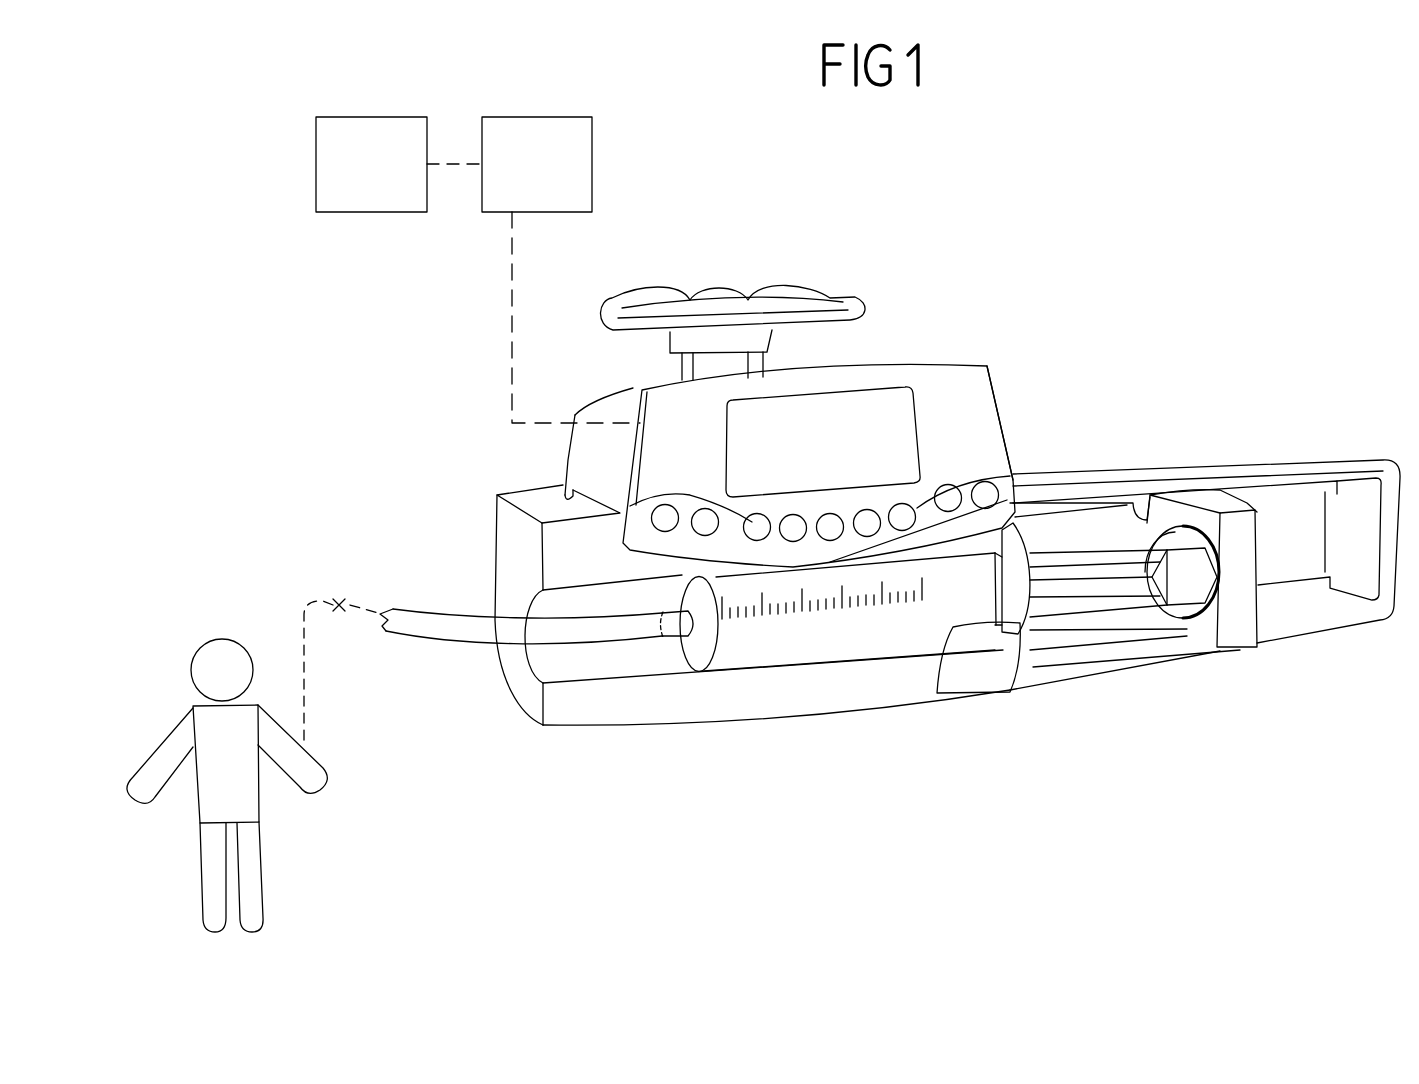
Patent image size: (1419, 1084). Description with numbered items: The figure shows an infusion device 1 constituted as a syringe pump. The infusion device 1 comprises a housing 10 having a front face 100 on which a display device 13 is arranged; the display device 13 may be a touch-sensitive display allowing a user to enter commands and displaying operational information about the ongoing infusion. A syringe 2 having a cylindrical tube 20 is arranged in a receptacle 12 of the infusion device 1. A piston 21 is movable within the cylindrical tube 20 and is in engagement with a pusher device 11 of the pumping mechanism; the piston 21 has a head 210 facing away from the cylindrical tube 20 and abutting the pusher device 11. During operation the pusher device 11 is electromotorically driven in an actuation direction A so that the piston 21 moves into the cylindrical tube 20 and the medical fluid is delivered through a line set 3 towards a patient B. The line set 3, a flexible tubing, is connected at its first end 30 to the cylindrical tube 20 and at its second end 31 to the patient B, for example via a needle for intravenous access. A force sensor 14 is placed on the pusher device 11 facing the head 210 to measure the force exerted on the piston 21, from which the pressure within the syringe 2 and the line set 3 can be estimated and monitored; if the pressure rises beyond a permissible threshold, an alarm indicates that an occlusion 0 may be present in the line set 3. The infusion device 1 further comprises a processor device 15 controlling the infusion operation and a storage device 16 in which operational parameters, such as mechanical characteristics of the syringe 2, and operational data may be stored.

The infusion device 1 is at (497, 497).
The syringe 2 is at (923, 666).
The line set 3 is at (477, 634).
The housing 10 is at (824, 416).
The pusher device 11 is at (1237, 633).
The receptacle 12 is at (933, 655).
The display device 13 is at (885, 408).
The force sensor 14 is at (1210, 568).
The processor device 15 is at (523, 138).
The storage device 16 is at (372, 140).
The cylindrical tube 20 is at (913, 642).
The piston 21 is at (1087, 607).
The first end 30 is at (675, 636).
The second end 31 is at (304, 747).
The front face 100 is at (980, 417).
The head 210 is at (1203, 605).
The occlusion 0 is at (339, 585).
The actuation direction A is at (1172, 793).
The patient B is at (284, 889).